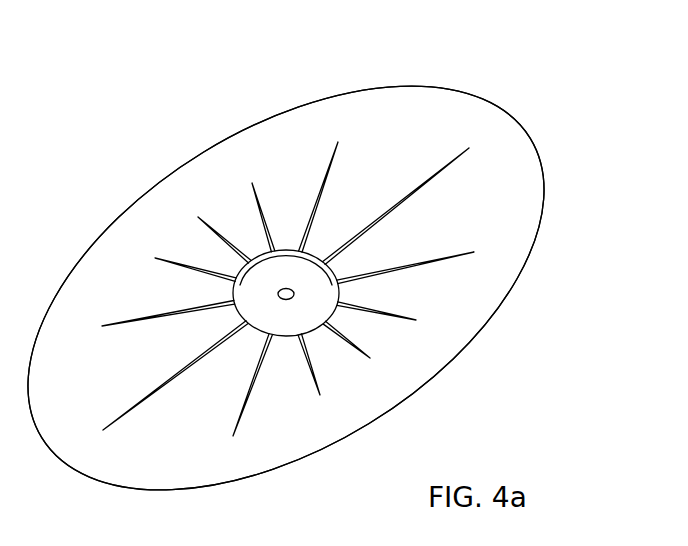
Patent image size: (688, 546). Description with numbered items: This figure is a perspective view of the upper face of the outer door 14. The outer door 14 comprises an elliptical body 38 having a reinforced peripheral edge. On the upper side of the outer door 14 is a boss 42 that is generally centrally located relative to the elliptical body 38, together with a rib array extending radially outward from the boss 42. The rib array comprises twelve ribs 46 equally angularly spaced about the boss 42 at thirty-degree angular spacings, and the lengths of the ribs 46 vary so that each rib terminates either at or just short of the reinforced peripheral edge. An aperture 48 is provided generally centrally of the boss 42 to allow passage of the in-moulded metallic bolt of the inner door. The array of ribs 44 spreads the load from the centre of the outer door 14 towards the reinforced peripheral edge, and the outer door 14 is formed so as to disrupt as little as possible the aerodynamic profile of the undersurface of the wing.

The outer door 14 is at (476, 100).
The elliptical body 38 is at (531, 137).
The boss 42 is at (328, 311).
The array of ribs 44 is at (358, 246).
The ribs 46 is at (474, 252).
The aperture 48 is at (287, 300).